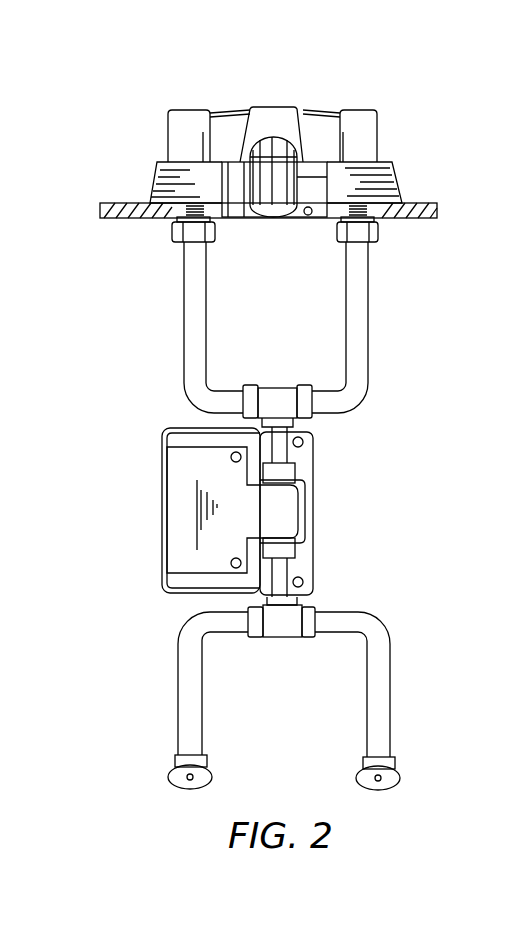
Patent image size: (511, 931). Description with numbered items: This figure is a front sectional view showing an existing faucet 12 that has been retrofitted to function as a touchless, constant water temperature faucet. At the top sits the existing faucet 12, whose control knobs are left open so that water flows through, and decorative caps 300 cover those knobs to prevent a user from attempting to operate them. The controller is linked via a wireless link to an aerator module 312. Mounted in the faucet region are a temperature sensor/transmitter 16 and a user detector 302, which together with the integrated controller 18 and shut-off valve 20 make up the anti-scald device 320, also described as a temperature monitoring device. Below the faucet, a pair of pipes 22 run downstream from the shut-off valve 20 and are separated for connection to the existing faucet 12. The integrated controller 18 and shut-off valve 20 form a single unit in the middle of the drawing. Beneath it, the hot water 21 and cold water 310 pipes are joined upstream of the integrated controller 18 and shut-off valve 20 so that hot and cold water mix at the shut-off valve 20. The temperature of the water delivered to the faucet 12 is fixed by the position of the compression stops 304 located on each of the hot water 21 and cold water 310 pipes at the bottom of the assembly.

The existing faucet 12 is at (306, 94).
The decorative caps 300 is at (371, 125).
The aerator module 312 is at (381, 178).
The temperature sensor/transmitter 16 is at (275, 219).
The user detector 302 is at (309, 221).
The pipes 22 is at (183, 328).
The integrated controller 18 is at (190, 512).
The shut-off valve 20 is at (192, 505).
The anti-scald device 320 is at (183, 797).
The hot water pipe 21 is at (178, 715).
The cold water pipe 310 is at (390, 727).
The compression stops 304 is at (355, 777).